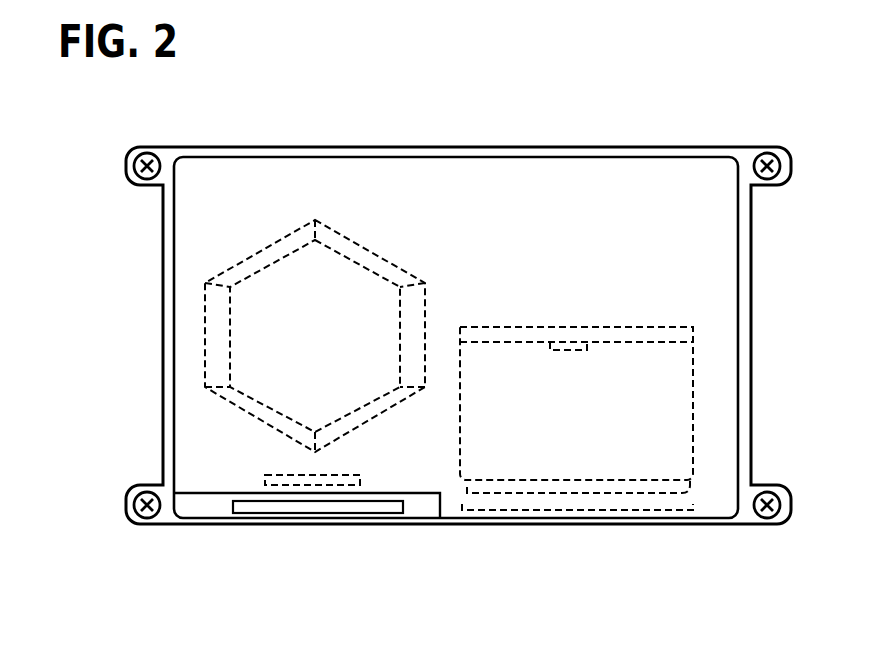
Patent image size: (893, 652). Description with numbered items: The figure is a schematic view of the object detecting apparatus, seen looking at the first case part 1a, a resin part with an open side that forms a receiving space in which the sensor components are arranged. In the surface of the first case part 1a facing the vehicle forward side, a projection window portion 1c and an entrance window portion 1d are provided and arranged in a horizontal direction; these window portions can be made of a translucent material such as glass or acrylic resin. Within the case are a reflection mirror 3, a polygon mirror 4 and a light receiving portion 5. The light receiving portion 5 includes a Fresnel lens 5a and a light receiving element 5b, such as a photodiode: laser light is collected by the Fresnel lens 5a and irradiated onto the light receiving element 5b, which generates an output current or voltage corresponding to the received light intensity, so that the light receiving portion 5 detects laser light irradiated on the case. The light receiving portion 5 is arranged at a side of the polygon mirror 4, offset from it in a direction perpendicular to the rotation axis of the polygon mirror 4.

The first case part 1a is at (587, 157).
The projection window portion 1c is at (347, 508).
The entrance window portion 1d is at (597, 518).
The reflection mirror 3 is at (265, 502).
The polygon mirror 4 is at (373, 248).
The light receiving portion 5 is at (694, 372).
The Fresnel lens 5a is at (657, 478).
The light receiving element 5b is at (576, 338).